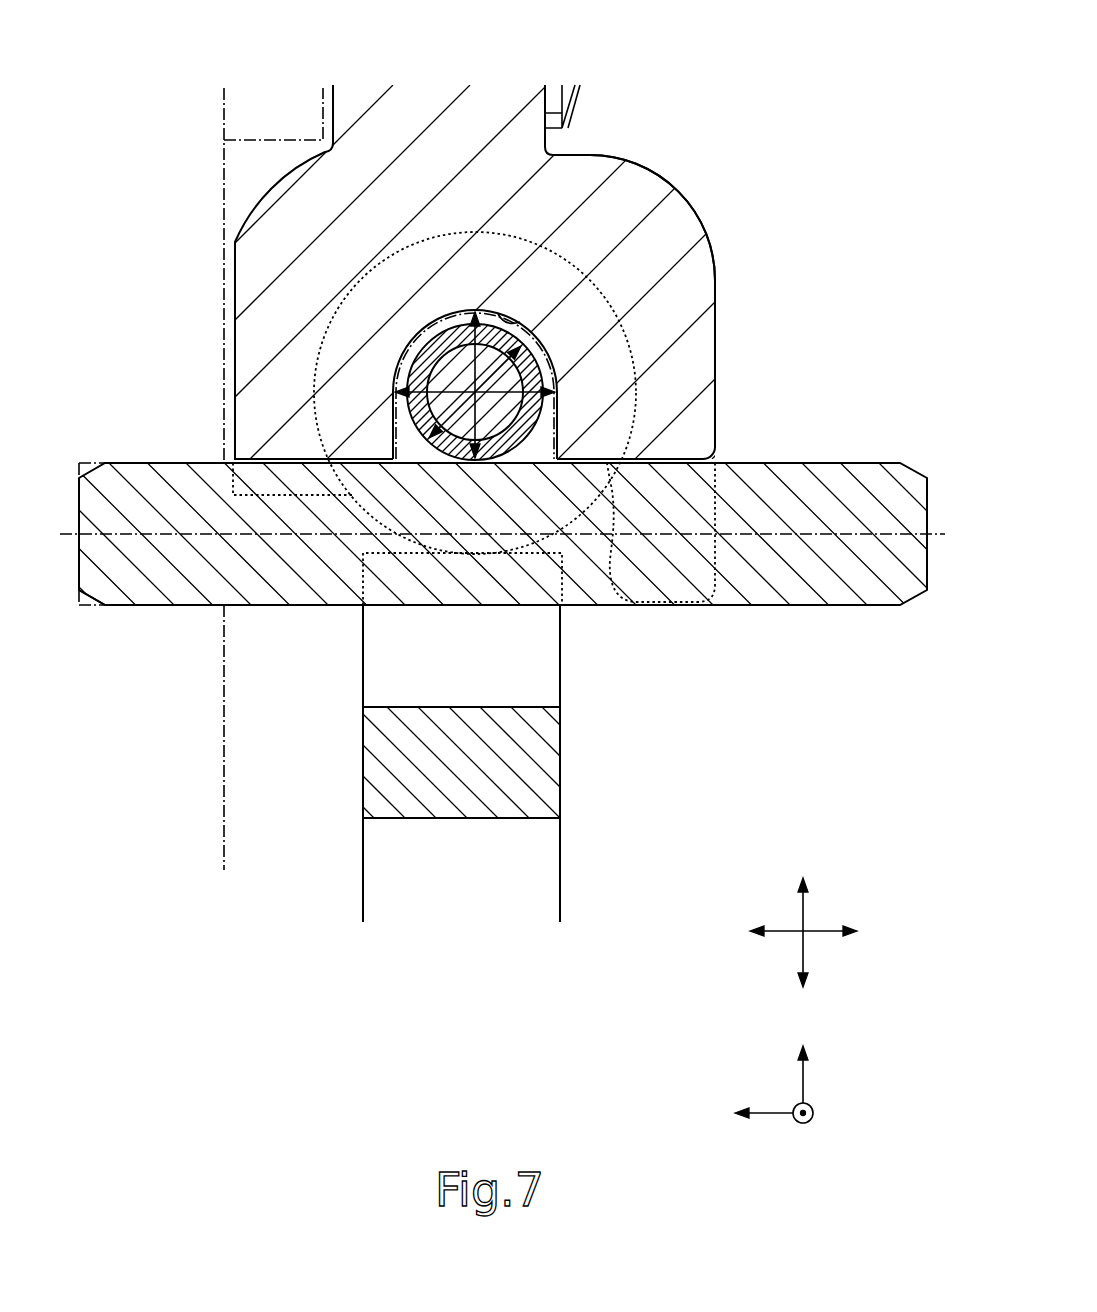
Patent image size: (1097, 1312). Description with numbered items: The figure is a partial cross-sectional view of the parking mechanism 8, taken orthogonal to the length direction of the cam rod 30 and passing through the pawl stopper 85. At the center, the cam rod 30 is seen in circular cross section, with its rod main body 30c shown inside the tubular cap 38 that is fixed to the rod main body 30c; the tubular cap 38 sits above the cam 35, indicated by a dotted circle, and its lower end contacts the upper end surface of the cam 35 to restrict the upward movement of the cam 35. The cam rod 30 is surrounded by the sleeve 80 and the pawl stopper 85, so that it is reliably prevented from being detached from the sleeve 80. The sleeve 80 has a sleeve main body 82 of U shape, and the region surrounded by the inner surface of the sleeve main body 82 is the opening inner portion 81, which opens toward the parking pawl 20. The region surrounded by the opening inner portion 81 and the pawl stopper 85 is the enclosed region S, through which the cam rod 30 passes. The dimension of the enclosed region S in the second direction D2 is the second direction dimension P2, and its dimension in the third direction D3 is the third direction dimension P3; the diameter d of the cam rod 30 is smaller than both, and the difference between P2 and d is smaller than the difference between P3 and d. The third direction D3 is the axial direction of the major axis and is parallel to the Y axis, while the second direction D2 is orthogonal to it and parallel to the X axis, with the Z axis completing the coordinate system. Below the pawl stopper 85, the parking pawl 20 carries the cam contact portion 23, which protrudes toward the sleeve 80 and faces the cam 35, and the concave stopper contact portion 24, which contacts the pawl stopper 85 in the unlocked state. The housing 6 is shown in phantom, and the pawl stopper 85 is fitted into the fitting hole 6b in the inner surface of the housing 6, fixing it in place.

The parking mechanism 8 is at (805, 65).
The sleeve 80 is at (645, 168).
The sleeve main body 82 is at (660, 178).
The opening inner portion 81 is at (518, 318).
The cam 35 is at (570, 250).
The enclosed region S is at (560, 322).
The diameter of the cam rod d is at (560, 376).
The third direction dimension P3 is at (548, 407).
The second direction dimension P2 is at (540, 418).
The cam rod 30 is at (413, 342).
The tubular cap 38 is at (432, 380).
The rod main body 30c is at (443, 381).
The pawl stopper 85 is at (862, 456).
The cam contact portion 23 is at (563, 568).
The stopper contact portion 24 is at (525, 707).
The parking pawl 20 is at (568, 803).
The housing 6 is at (228, 778).
The fitting hole 6b is at (120, 597).
The second direction D2 is at (805, 912).
The third direction D3 is at (822, 932).
The X axis X is at (805, 1060).
The Y axis Y is at (752, 1114).
The Z axis Z is at (815, 1121).